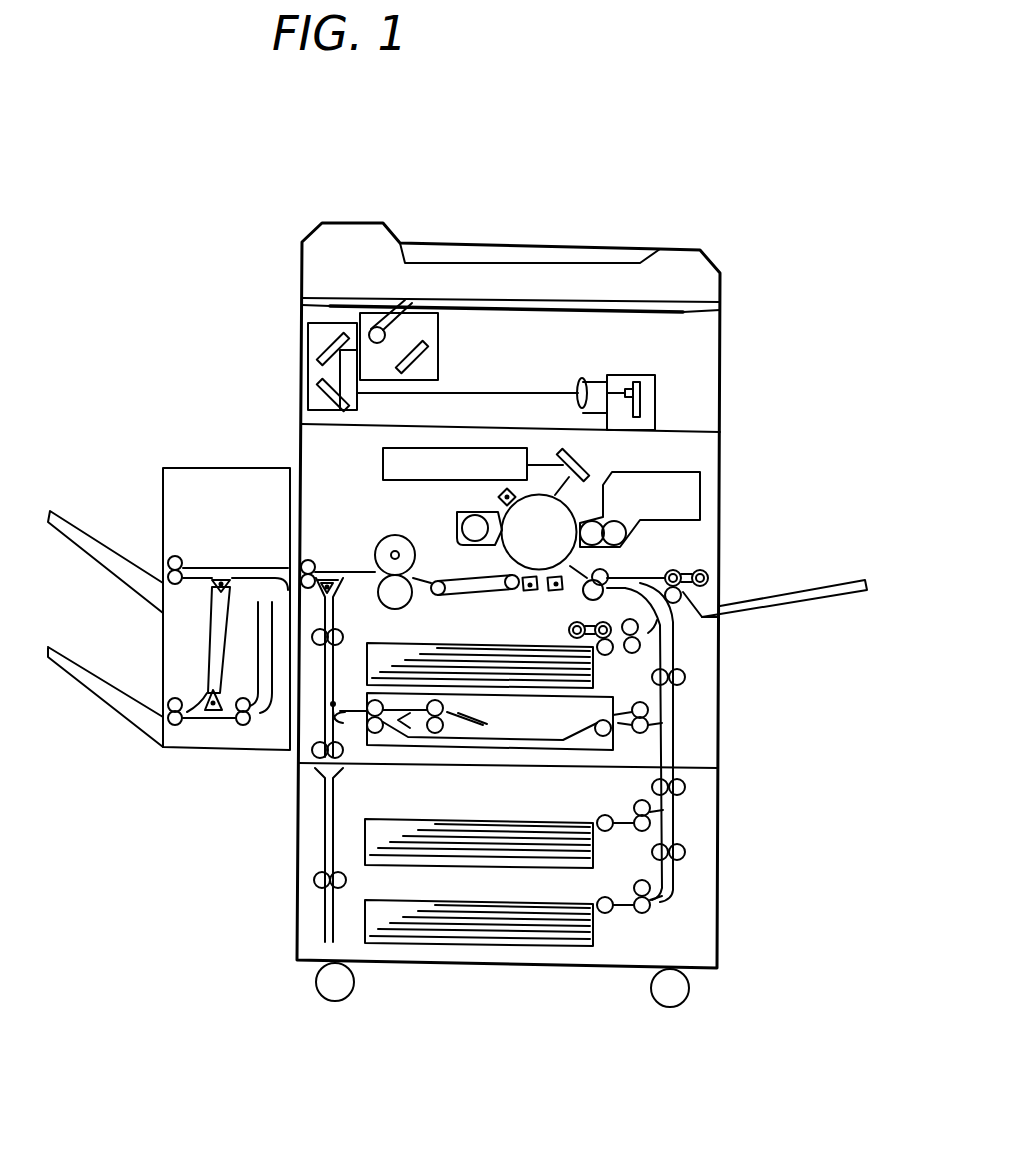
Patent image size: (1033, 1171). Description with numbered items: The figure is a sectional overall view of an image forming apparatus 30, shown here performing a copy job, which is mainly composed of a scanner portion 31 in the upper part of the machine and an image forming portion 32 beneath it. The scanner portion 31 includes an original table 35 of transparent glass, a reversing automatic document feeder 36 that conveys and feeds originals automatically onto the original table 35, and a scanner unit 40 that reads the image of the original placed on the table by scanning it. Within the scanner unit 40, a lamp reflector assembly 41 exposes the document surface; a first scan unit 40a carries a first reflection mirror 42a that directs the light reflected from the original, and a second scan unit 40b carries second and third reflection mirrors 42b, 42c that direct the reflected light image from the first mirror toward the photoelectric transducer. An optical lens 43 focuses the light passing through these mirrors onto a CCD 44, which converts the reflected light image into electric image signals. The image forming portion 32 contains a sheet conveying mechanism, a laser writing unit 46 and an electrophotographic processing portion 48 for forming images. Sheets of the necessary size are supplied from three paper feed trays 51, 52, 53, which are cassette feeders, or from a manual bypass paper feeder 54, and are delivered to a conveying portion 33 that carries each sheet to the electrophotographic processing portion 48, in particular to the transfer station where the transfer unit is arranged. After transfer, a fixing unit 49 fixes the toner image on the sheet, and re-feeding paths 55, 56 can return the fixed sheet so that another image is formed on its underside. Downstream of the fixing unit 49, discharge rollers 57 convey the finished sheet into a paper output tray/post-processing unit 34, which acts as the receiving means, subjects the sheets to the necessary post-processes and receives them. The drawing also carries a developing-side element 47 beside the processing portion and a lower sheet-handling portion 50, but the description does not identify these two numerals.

The image forming apparatus 30 is at (776, 380).
The scanner portion 31 is at (722, 342).
The image forming portion 32 is at (722, 505).
The conveying portion 33 is at (627, 578).
The paper output tray/post-processing unit 34 is at (203, 468).
The original table 35 is at (512, 300).
The reversing automatic document feeder 36 is at (586, 290).
The scanner unit 40 is at (388, 359).
The first scan unit 40a is at (437, 380).
The second scan unit 40b is at (357, 410).
The lamp reflector assembly 41 is at (392, 334).
The first reflection mirror 42a is at (427, 348).
The second reflection mirror 42b is at (320, 360).
The third reflection mirror 42c is at (327, 395).
The optical lens 43 is at (583, 383).
The CCD 44 is at (625, 388).
The laser writing unit 46 is at (422, 480).
The developing device 47 is at (678, 460).
The electrophotographic processing portion 48 is at (574, 508).
The fixing unit 49 is at (412, 554).
The paper feed section 50 is at (686, 751).
The paper feed tray 51 is at (405, 645).
The paper feed tray 52 is at (472, 820).
The paper feed tray 53 is at (463, 903).
The manual bypass paper feeder 54 is at (790, 594).
The re-feeding path 55 is at (433, 750).
The re-feeding path 56 is at (333, 608).
The discharge rollers 57 is at (312, 558).